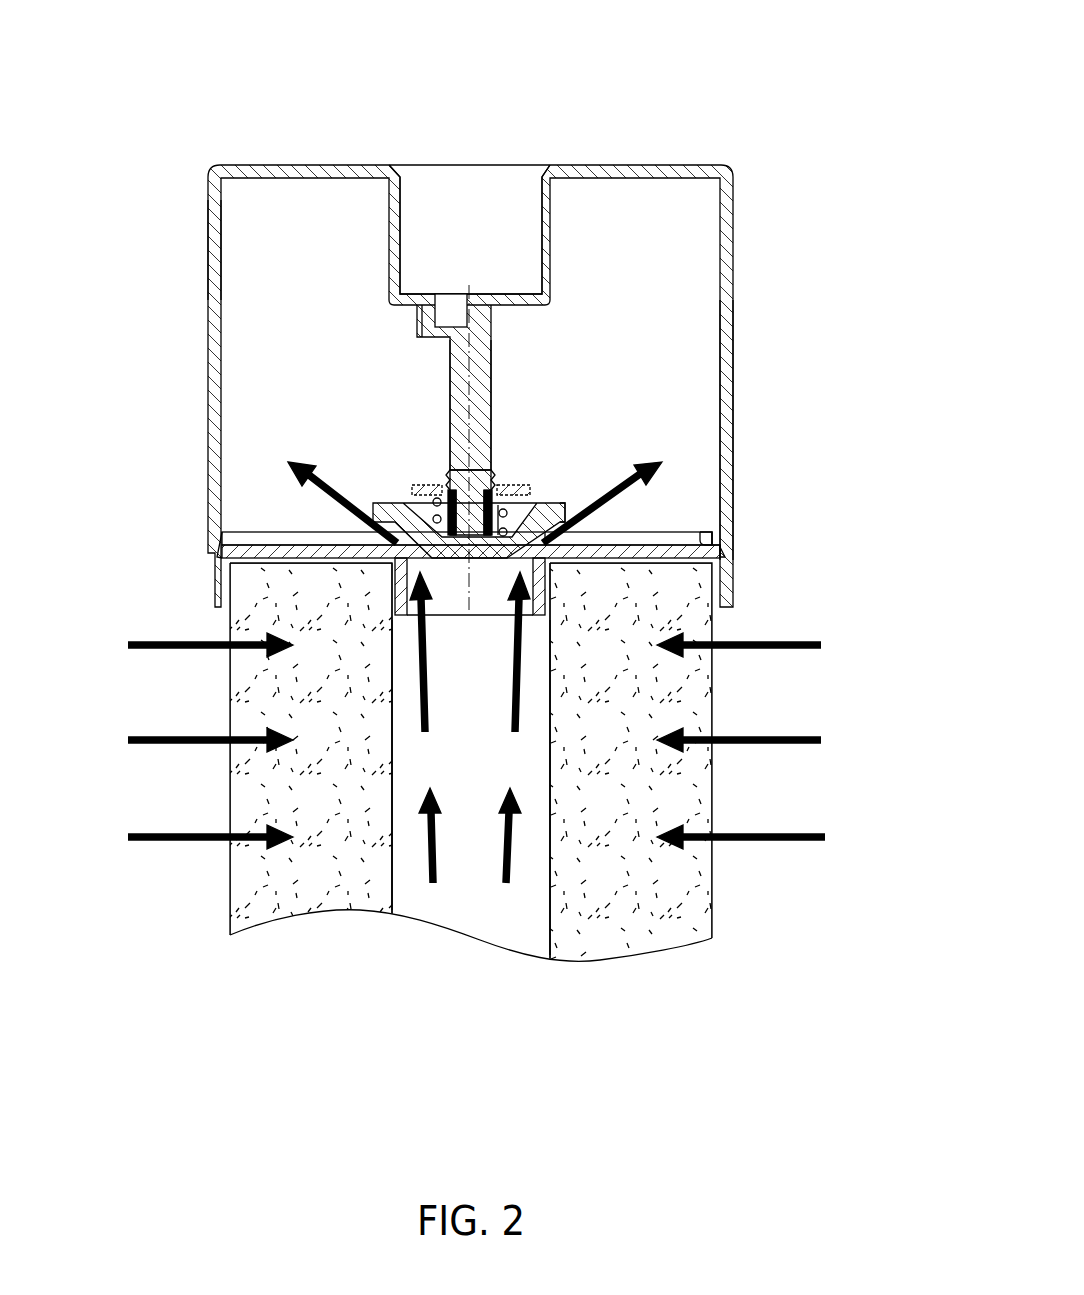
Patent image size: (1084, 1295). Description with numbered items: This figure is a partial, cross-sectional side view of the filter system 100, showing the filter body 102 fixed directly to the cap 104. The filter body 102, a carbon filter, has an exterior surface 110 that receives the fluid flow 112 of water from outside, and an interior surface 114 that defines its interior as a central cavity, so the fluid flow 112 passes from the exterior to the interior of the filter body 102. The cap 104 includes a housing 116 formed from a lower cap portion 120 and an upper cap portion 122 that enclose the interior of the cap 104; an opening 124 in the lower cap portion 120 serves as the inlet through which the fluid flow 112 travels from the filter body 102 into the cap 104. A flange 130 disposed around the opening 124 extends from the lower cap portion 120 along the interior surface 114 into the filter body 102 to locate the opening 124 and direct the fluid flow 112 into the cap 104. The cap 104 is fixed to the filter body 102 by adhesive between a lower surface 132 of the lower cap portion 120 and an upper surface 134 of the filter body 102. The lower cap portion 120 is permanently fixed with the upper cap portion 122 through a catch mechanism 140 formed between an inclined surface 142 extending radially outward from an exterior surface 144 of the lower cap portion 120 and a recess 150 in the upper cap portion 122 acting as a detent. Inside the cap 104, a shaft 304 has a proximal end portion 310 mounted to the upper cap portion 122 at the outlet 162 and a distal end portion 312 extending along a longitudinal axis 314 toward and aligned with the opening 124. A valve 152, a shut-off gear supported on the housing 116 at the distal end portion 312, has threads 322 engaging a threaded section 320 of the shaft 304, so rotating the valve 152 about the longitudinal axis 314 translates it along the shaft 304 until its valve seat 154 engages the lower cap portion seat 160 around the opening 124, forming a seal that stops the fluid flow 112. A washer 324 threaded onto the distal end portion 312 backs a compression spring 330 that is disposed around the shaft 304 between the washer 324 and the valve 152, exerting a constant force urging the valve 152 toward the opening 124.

The filter system 100 is at (503, 532).
The filter body 102 is at (662, 888).
The cap 104 is at (733, 257).
The exterior surface 110 is at (713, 907).
The fluid flow 112 is at (197, 648).
The interior surface 114 is at (547, 917).
The housing 116 is at (733, 330).
The lower cap portion 120 is at (237, 572).
The upper cap portion 122 is at (215, 207).
The opening 124 is at (556, 600).
The flange 130 is at (556, 577).
The lower surface 132 is at (263, 565).
The upper surface 134 is at (290, 565).
The catch mechanism 140 is at (754, 527).
The inclined surface 142 is at (725, 557).
The exterior surface 144 is at (727, 560).
The recess 150 is at (700, 548).
The valve 152 is at (560, 515).
The valve seat 154 is at (573, 510).
The lower cap portion seat 160 is at (542, 545).
The outlet 162 is at (541, 232).
The shaft 304 is at (478, 405).
The proximal end portion 310 is at (470, 358).
The distal end portion 312 is at (483, 488).
The longitudinal axis 314 is at (460, 445).
The threaded section 320 is at (497, 487).
The threads 322 is at (505, 487).
The washer 324 is at (425, 483).
The spring 330 is at (405, 500).